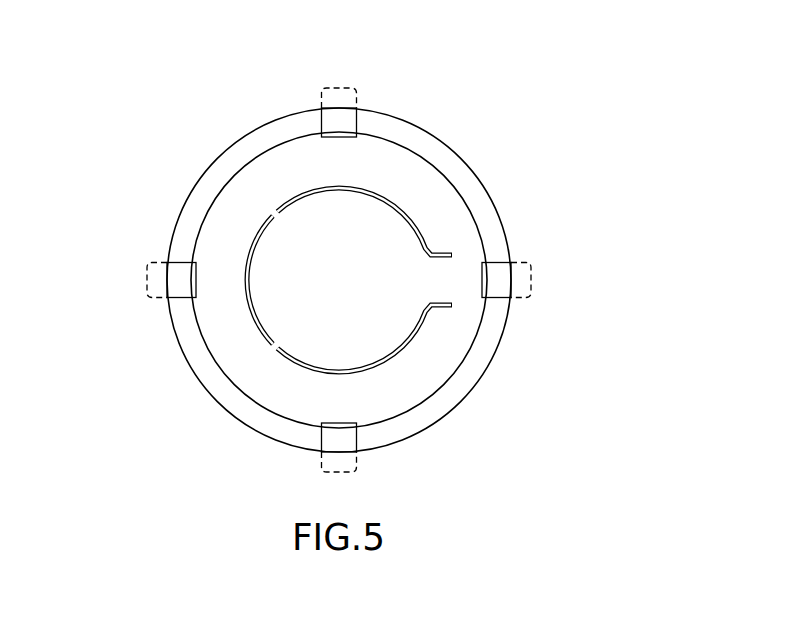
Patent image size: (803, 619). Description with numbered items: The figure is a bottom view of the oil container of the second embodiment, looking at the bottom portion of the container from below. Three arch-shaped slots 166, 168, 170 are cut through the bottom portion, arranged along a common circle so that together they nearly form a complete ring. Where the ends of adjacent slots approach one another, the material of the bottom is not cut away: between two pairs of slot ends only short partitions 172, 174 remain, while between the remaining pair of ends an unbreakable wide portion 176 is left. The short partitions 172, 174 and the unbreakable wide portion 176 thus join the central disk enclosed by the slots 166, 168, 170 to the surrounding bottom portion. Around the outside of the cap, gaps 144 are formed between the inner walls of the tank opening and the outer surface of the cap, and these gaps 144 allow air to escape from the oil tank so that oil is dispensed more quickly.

The gaps 144 is at (465, 183).
The arch-shaped slot 166 is at (247, 277).
The arch-shaped slot 168 is at (372, 192).
The arch-shaped slot 170 is at (400, 352).
The short partition 172 is at (268, 213).
The short partition 174 is at (273, 348).
The unbreakable wide portion 176 is at (448, 285).